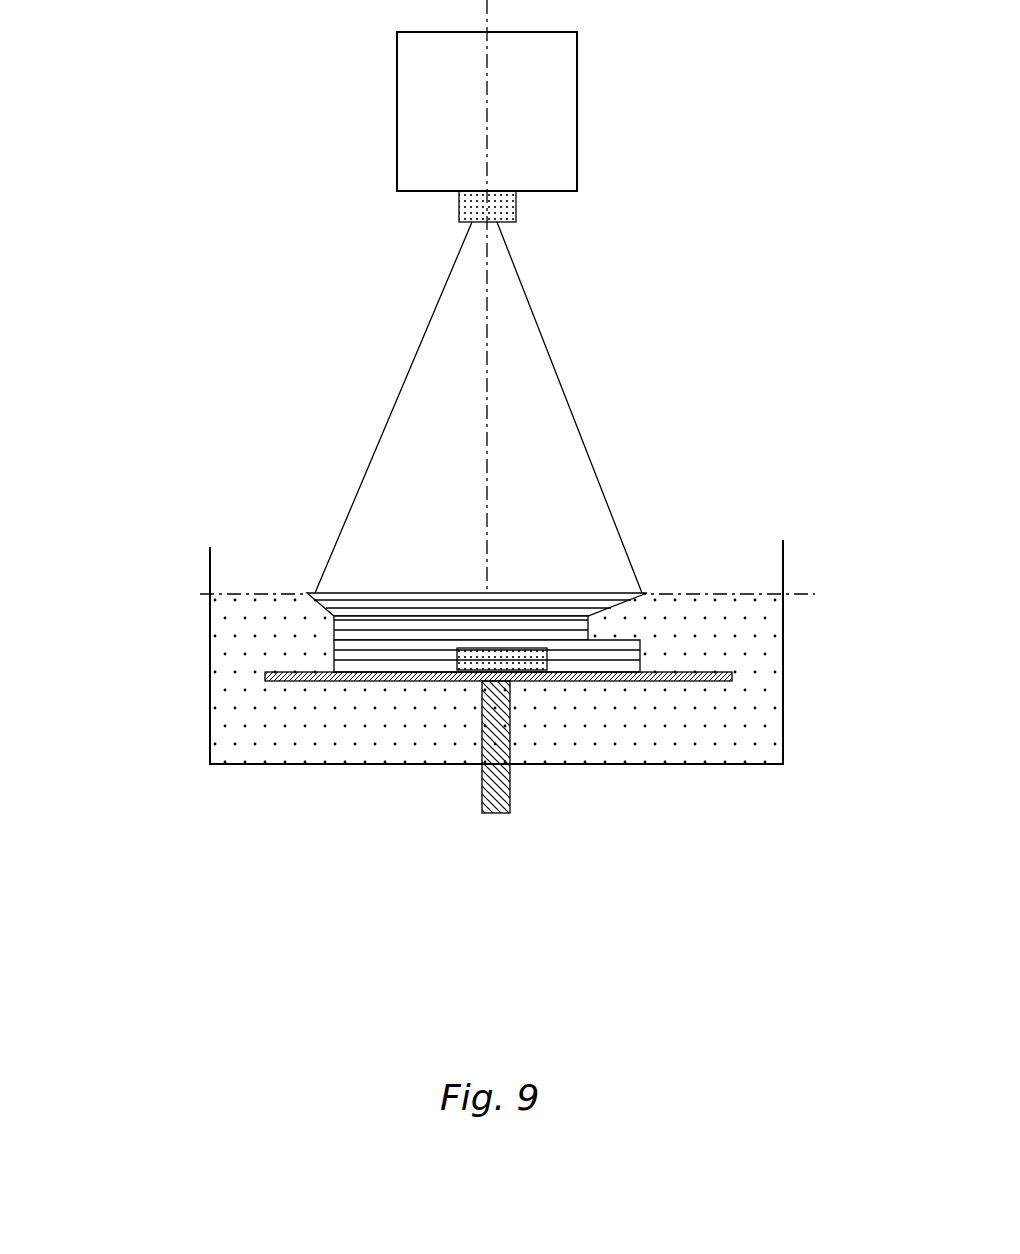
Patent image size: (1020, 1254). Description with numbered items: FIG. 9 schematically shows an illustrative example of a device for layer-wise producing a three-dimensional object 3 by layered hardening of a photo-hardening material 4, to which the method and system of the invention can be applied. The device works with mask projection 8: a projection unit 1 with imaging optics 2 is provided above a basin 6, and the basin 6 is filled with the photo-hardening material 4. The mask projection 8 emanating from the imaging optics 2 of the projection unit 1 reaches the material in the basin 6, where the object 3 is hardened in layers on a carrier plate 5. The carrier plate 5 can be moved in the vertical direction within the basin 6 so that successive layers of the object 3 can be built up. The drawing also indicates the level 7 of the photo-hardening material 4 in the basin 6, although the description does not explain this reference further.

The projection unit 1 is at (547, 81).
The imaging optics 2 is at (515, 223).
The three-dimensional object 3 is at (513, 593).
The photo-hardening material 4 is at (265, 617).
The carrier plate 5 is at (385, 682).
The basin 6 is at (783, 660).
The liquid level 7 is at (798, 592).
The mask projection 8 is at (543, 378).